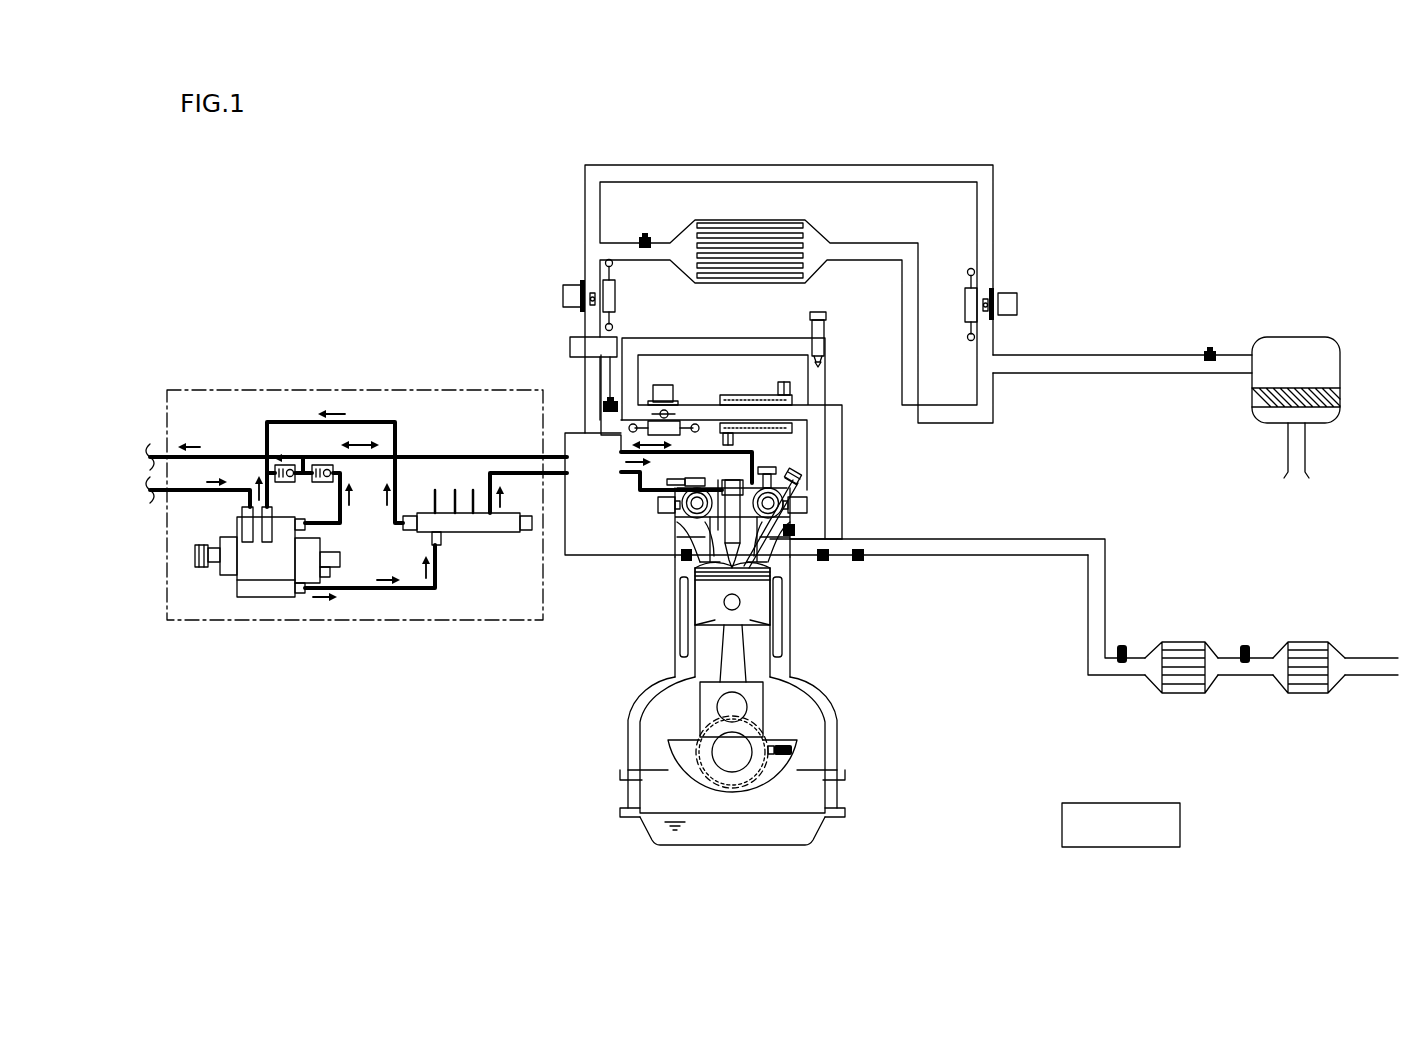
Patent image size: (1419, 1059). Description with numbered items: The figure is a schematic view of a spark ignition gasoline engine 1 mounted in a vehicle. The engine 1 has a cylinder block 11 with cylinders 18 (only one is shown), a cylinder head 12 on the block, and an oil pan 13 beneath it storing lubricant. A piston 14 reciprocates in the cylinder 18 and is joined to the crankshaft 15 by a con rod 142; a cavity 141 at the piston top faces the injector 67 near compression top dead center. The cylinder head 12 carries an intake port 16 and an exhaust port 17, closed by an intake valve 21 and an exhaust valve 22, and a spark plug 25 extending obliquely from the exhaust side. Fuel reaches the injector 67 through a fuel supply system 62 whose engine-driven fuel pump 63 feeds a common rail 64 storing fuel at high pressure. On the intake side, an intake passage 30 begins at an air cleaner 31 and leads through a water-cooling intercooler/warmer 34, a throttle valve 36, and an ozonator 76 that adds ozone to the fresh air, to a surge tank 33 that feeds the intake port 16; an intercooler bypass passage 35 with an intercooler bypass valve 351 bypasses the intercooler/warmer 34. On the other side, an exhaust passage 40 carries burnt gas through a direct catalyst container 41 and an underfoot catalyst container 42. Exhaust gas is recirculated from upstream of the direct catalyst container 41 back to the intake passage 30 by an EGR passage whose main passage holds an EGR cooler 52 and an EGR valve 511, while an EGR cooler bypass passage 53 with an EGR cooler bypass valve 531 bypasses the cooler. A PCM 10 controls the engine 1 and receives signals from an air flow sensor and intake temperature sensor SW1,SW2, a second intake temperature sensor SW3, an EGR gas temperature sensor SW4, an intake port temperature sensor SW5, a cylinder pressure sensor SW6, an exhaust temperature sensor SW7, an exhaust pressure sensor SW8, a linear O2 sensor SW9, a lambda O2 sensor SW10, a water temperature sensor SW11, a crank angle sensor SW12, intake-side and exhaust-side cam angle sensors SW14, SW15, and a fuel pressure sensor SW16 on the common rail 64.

The engine 1 is at (1114, 174).
The PCM 10 is at (1181, 826).
The cylinder block 11 is at (790, 686).
The cylinder head 12 is at (791, 570).
The oil pan 13 is at (820, 836).
The piston 14 is at (688, 640).
The cavity 141 is at (783, 650).
The con rod 142 is at (700, 700).
The crankshaft 15 is at (732, 762).
The intake port 16 is at (678, 552).
The exhaust port 17 is at (792, 548).
The cylinder 18 is at (700, 672).
The intake valve 21 is at (700, 622).
The exhaust valve 22 is at (772, 600).
The spark plug 25 is at (790, 478).
The intake passage 30 is at (580, 308).
The air cleaner 31 is at (1317, 337).
The surge tank 33 is at (609, 498).
The intercooler/warmer 34 is at (776, 220).
The intercooler bypass passage 35 is at (945, 165).
The intercooler bypass valve 351 is at (1007, 292).
The throttle valve 36 is at (577, 282).
The exhaust passage 40 is at (1020, 540).
The direct catalyst container 41 is at (1185, 642).
The underfoot catalyst container 42 is at (1308, 642).
The EGR valve 511 is at (663, 385).
The EGR cooler 52 is at (767, 394).
The EGR cooler bypass passage 53 is at (712, 338).
The EGR cooler bypass valve 531 is at (828, 334).
The fuel supply system 62 is at (263, 390).
The fuel pump 63 is at (258, 598).
The common rail 64 is at (460, 532).
The injector 67 is at (731, 480).
The ozonator 76 is at (570, 344).
The air flow sensor and intake temperature sensor SW1,SW2 is at (1210, 348).
The second intake temperature sensor SW3 is at (645, 236).
The EGR gas temperature sensor SW4 is at (609, 399).
The intake port temperature sensor SW5 is at (685, 560).
The cylinder pressure sensor SW6 is at (720, 480).
The exhaust temperature sensor SW7 is at (824, 562).
The exhaust pressure sensor SW8 is at (859, 562).
The linear O2 sensor SW9 is at (1122, 645).
The lambda O2 sensor SW10 is at (1245, 645).
The water temperature sensor SW11 is at (796, 530).
The crank angle sensor SW12 is at (792, 752).
The intake-side cam angle sensor SW14 is at (657, 512).
The exhaust-side cam angle sensor SW15 is at (808, 505).
The fuel pressure sensor SW16 is at (526, 532).